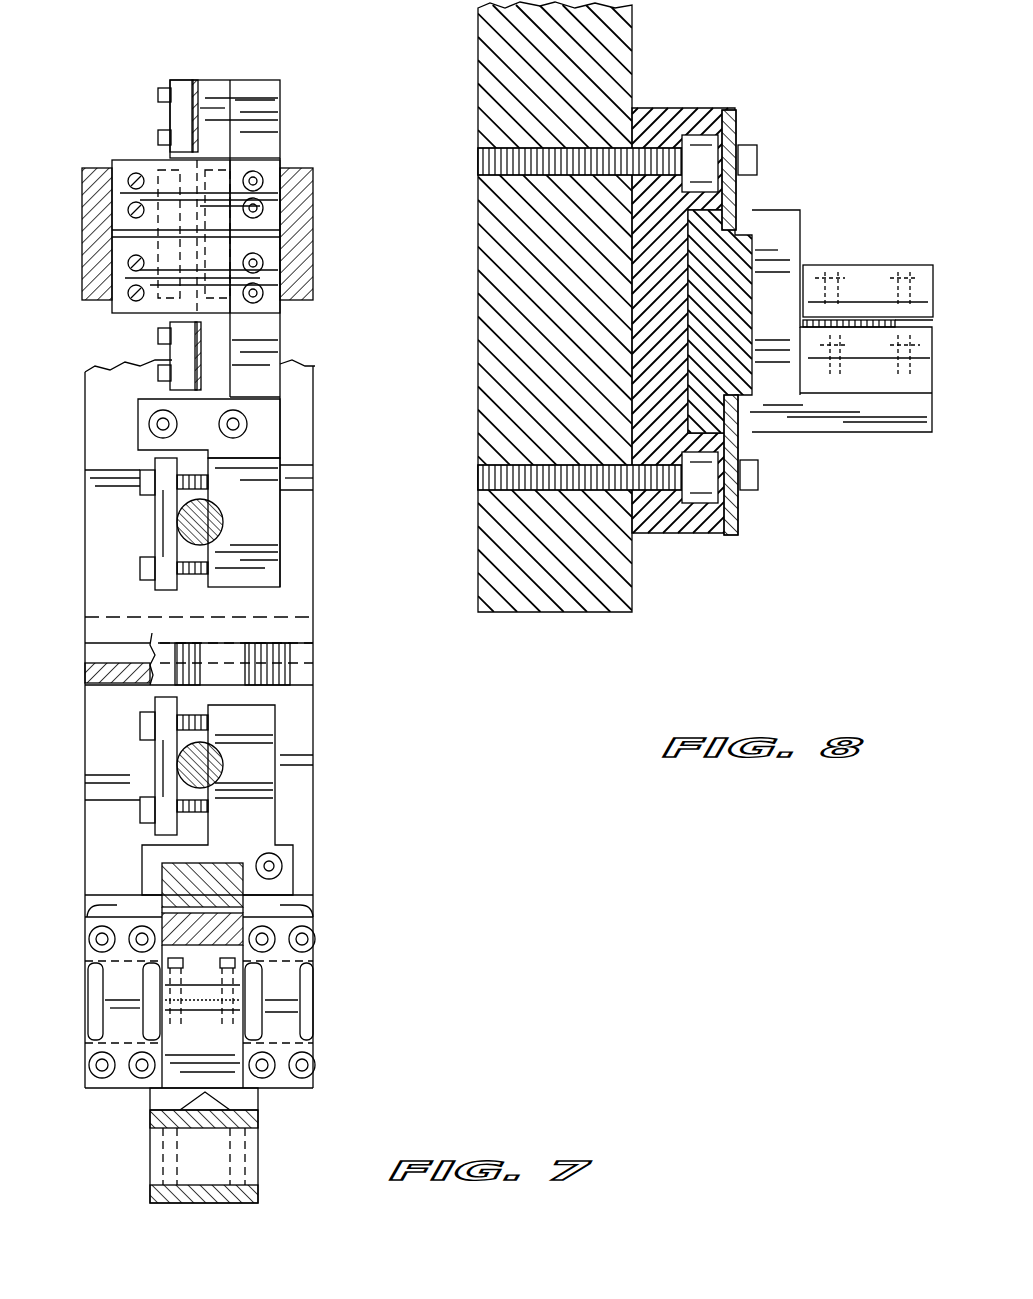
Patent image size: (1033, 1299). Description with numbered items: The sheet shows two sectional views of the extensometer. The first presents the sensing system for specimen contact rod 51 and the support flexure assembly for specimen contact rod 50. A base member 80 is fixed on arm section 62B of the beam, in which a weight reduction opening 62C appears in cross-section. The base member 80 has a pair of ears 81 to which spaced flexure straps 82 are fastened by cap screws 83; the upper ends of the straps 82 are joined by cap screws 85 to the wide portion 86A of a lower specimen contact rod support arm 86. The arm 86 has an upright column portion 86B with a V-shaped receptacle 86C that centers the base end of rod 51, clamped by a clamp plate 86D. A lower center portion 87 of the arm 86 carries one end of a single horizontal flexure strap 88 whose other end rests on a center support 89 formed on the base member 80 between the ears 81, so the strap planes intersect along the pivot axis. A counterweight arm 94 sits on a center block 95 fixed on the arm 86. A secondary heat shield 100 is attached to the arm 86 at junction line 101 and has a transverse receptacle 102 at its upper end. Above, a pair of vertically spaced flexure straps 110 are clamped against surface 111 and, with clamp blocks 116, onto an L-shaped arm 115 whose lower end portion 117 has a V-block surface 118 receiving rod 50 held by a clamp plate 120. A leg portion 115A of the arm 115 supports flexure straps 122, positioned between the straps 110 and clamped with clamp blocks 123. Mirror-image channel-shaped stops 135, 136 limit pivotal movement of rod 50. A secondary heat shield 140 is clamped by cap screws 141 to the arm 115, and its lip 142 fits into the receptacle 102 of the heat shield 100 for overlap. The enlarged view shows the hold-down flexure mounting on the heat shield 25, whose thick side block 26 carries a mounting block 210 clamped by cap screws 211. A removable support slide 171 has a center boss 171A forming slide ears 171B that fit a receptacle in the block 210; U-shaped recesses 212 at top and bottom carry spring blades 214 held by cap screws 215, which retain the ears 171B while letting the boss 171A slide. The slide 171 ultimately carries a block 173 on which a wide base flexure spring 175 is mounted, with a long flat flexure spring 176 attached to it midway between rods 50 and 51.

In FIG. 8, the heat shield 25 is at (475, 88).
In FIG. 8, the side block 26 is at (528, 612).
In FIG. 7, the specimen contact rod 50 is at (215, 516).
In FIG. 7, the specimen contact rod 51 is at (213, 748).
In FIG. 7, the arm section 62B is at (262, 1163).
In FIG. 7, the weight reduction opening 62C is at (205, 1168).
In FIG. 7, the base member 80 is at (262, 1100).
In FIG. 7, the ears 81 is at (88, 1090).
In FIG. 7, the flexure straps 82 is at (118, 1018).
In FIG. 7, the cap screws 83 is at (90, 1070).
In FIG. 7, the cap screws 85 is at (140, 948).
In FIG. 7, the specimen contact rod support arm 86 is at (275, 740).
In FIG. 7, the wide portion 86A is at (95, 906).
In FIG. 7, the upright column portion 86B is at (258, 808).
In FIG. 7, the V-shaped receptacle 86C is at (222, 775).
In FIG. 7, the clamp plate 86D is at (165, 705).
In FIG. 7, the lower center portion 87 is at (175, 986).
In FIG. 7, the flexure strap 88 is at (240, 1000).
In FIG. 7, the center support 89 is at (178, 1068).
In FIG. 7, the counterweight arm 94 is at (215, 866).
In FIG. 7, the center block 95 is at (190, 905).
In FIG. 7, the secondary heat shield 100 is at (107, 746).
In FIG. 7, the junction line 101 is at (283, 870).
In FIG. 7, the transverse receptacle 102 is at (100, 655).
In FIG. 7, the flexure straps 110 is at (195, 85).
In FIG. 7, the surface 111 is at (170, 318).
In FIG. 7, the arm 115 is at (255, 85).
In FIG. 7, the leg portion 115A is at (268, 108).
In FIG. 7, the clamp blocks 116 is at (180, 90).
In FIG. 7, the lower end portion 117 is at (268, 535).
In FIG. 7, the V-block surface 118 is at (262, 518).
In FIG. 7, the clamp plate 120 is at (162, 518).
In FIG. 7, the flexure straps 122 is at (170, 185).
In FIG. 7, the clamp blocks 123 is at (268, 192).
In FIG. 7, the stop 135 is at (90, 228).
In FIG. 7, the stop 136 is at (300, 230).
In FIG. 7, the secondary heat shield 140 is at (100, 520).
In FIG. 7, the cap screws 141 is at (178, 432).
In FIG. 7, the lip 142 is at (125, 640).
In FIG. 8, the support slide 171 is at (700, 305).
In FIG. 8, the center boss 171A is at (742, 290).
In FIG. 8, the slide ears 171B is at (738, 218).
In FIG. 8, the block 173 is at (820, 415).
In FIG. 8, the base flexure spring 175 is at (930, 290).
In FIG. 8, the long flat flexure spring 176 is at (870, 330).
In FIG. 8, the mounting block 210 is at (655, 515).
In FIG. 8, the cap screws 211 is at (655, 150).
In FIG. 8, the recesses 212 is at (732, 125).
In FIG. 8, the spring blades 214 is at (745, 190).
In FIG. 8, the cap screws 215 is at (742, 152).